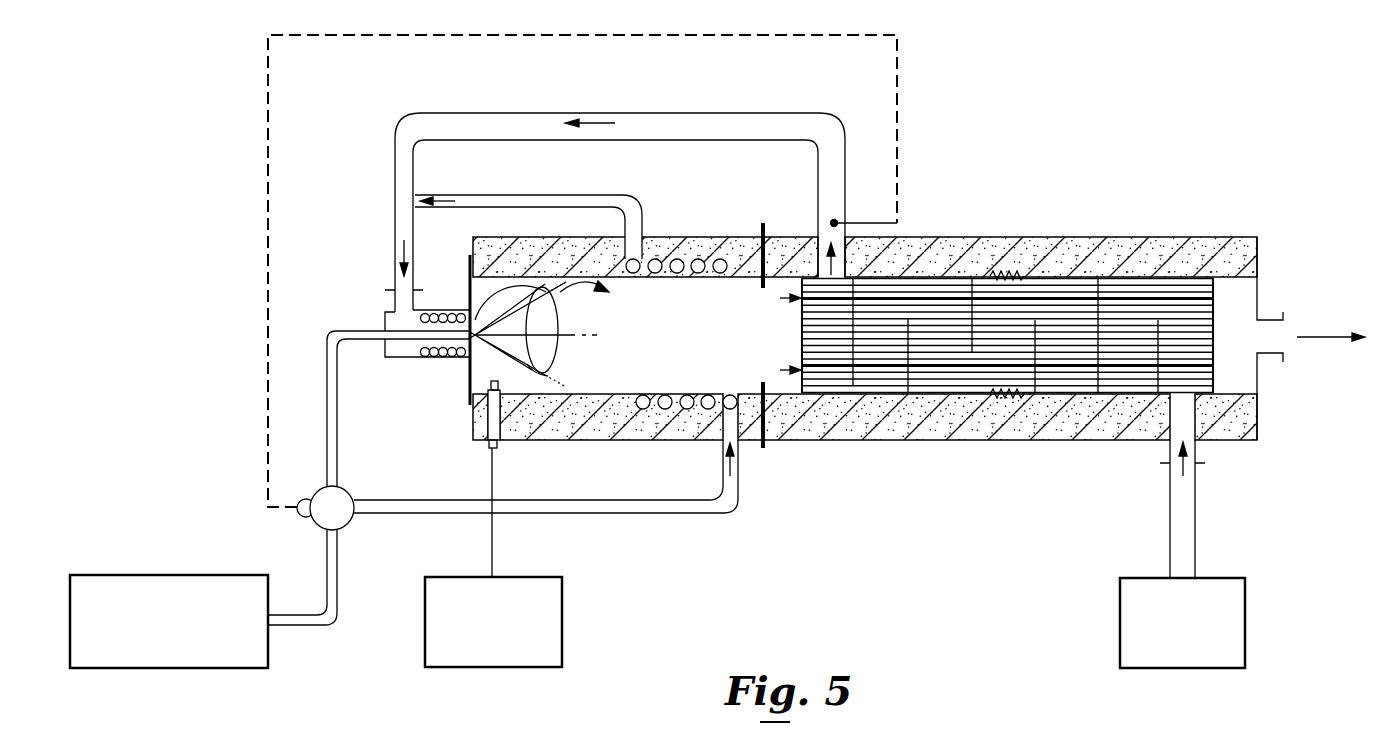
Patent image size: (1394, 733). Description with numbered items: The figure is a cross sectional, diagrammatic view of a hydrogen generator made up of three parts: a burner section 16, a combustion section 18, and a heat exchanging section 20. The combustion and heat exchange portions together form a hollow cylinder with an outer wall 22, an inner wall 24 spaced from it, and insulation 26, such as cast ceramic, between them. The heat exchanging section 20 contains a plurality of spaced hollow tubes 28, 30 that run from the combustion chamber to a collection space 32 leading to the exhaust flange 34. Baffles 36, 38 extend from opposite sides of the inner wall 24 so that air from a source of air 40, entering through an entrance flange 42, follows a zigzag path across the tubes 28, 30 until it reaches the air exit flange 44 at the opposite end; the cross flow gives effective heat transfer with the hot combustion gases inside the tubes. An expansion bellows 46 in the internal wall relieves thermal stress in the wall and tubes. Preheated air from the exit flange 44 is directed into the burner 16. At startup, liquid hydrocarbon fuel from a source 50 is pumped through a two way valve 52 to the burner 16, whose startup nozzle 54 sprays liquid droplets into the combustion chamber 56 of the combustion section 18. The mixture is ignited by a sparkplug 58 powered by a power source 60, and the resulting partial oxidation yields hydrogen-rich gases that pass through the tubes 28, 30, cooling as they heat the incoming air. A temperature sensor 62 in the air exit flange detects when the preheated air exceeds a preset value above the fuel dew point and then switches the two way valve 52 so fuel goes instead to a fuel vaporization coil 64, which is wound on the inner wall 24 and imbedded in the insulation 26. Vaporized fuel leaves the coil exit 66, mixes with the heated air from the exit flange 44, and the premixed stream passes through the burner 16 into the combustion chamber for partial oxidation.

The burner section 16 is at (436, 308).
The combustion section 18 is at (663, 232).
The heat exchanging section 20 is at (1021, 232).
The outer wall 22 is at (1086, 237).
The inner wall 24 is at (1234, 280).
The insulation 26 is at (924, 237).
The hollow tube 28 is at (841, 386).
The hollow tube 30 is at (887, 370).
The collection space 32 is at (1236, 318).
The exhaust flange 34 is at (1282, 358).
The baffle 36 is at (1158, 378).
The baffle 38 is at (1098, 350).
The source of air 40 is at (1222, 578).
The entrance flange 42 is at (1197, 463).
The air exit flange 44 is at (819, 215).
The expansion bellows 46 is at (992, 397).
The source of liquid hydrocarbon fuel 50 is at (198, 575).
The two way valve 52 is at (343, 491).
The startup nozzle 54 is at (406, 358).
The combustion chamber 56 is at (650, 343).
The sparkplug 58 is at (475, 392).
The power source 60 is at (523, 577).
The temperature sensor 62 is at (838, 214).
The fuel vaporization coil 64 is at (666, 395).
The coil exit 66 is at (626, 195).